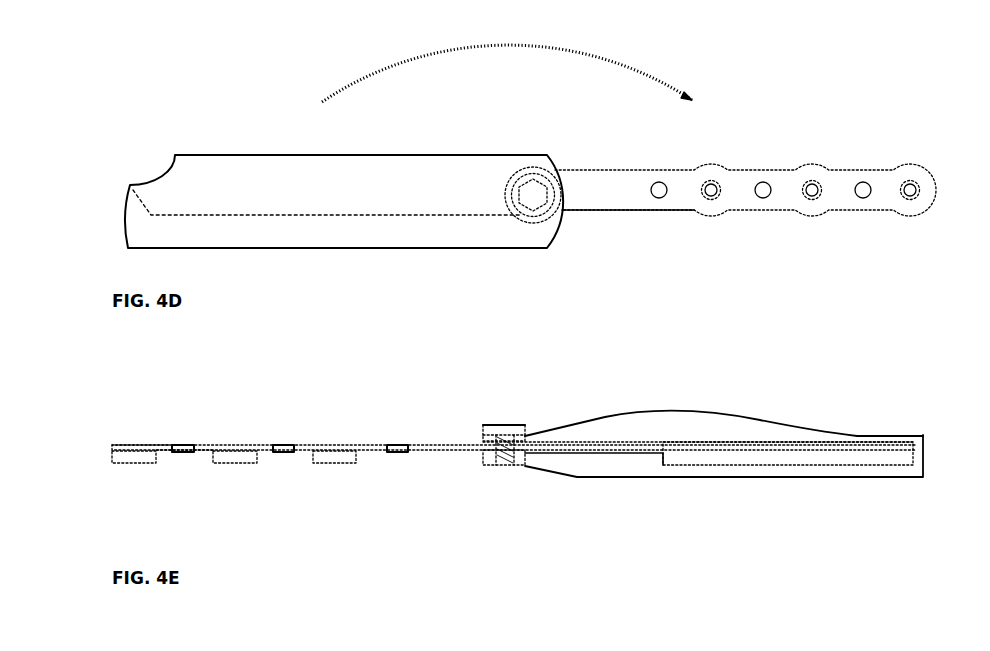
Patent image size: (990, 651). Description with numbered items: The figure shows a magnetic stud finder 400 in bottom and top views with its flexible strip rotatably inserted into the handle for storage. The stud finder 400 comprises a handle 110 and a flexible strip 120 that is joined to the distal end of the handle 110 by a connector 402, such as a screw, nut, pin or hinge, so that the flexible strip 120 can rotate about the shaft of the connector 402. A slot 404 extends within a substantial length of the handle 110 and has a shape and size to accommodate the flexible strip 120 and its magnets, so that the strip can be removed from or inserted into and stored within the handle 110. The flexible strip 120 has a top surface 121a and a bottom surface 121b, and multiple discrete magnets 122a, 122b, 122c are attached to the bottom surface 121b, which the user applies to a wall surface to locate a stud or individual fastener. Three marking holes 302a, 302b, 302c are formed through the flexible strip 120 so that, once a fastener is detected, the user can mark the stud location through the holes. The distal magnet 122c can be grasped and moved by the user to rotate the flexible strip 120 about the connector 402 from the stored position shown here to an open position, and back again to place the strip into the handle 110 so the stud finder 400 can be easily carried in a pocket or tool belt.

In FIG. 4D, the handle 110 is at (367, 253).
In FIG. 4E, the handle 110 is at (625, 478).
In FIG. 4D, the flexible strip 120 is at (600, 213).
In FIG. 4E, the flexible strip 120 is at (457, 453).
In FIG. 4E, the top surface 121a is at (142, 443).
In FIG. 4E, the bottom surface 121b is at (160, 452).
In FIG. 4D, the magnet 122a is at (708, 201).
In FIG. 4E, the magnet 122a is at (338, 464).
In FIG. 4D, the magnet 122b is at (810, 201).
In FIG. 4E, the magnet 122b is at (235, 464).
In FIG. 4D, the distal magnet 122c is at (908, 201).
In FIG. 4E, the distal magnet 122c is at (133, 464).
In FIG. 4D, the marking hole 302a is at (862, 182).
In FIG. 4E, the marking hole 302a is at (183, 444).
In FIG. 4D, the marking hole 302b is at (762, 182).
In FIG. 4E, the marking hole 302b is at (283, 444).
In FIG. 4D, the marking hole 302c is at (657, 181).
In FIG. 4E, the marking hole 302c is at (400, 441).
In FIG. 4D, the magnetic stud finder 400 is at (295, 127).
In FIG. 4E, the magnetic stud finder 400 is at (723, 401).
In FIG. 4D, the connector 402 is at (523, 170).
In FIG. 4E, the connector 402 is at (508, 427).
In FIG. 4E, the slot 404 is at (797, 453).